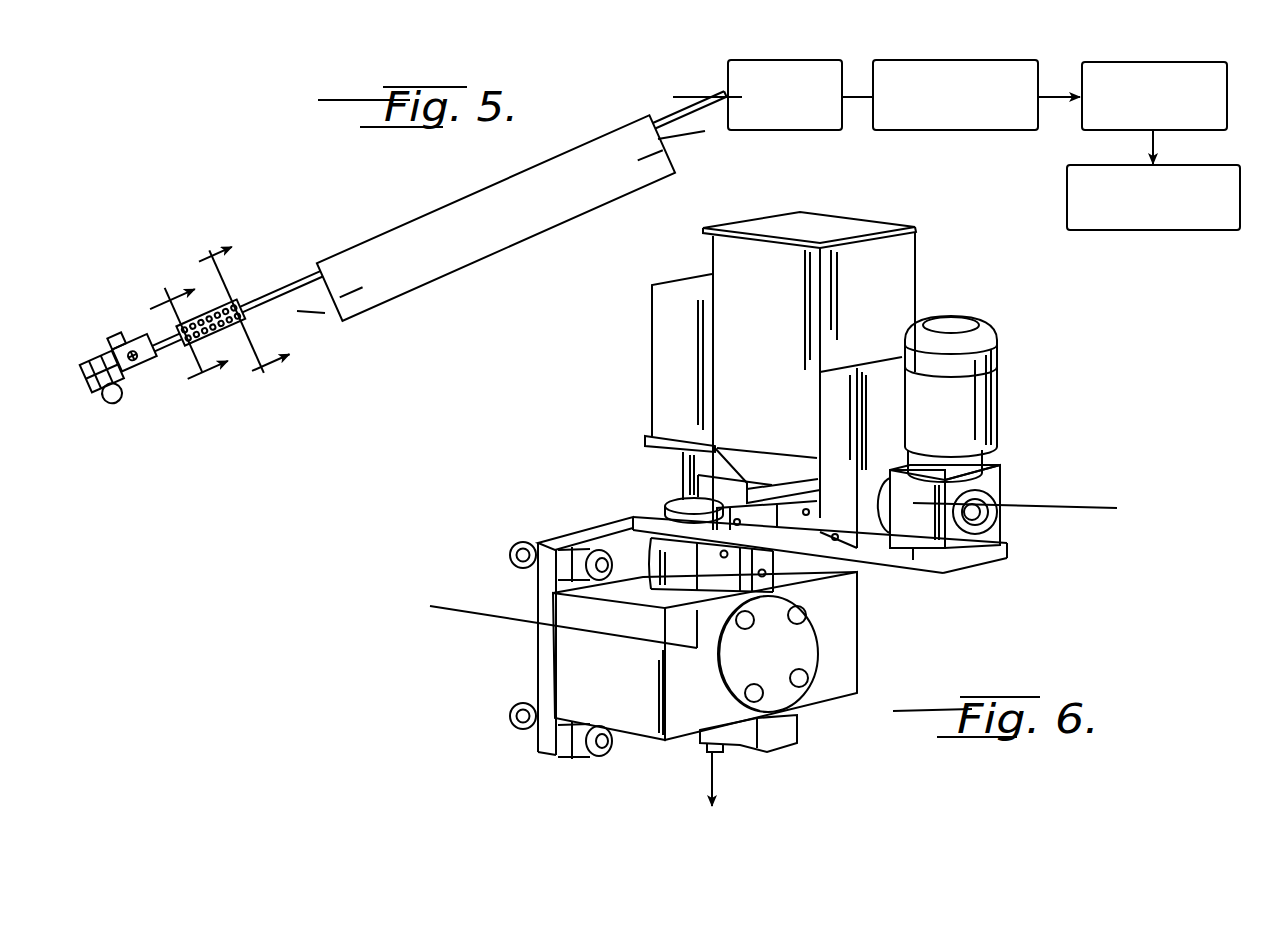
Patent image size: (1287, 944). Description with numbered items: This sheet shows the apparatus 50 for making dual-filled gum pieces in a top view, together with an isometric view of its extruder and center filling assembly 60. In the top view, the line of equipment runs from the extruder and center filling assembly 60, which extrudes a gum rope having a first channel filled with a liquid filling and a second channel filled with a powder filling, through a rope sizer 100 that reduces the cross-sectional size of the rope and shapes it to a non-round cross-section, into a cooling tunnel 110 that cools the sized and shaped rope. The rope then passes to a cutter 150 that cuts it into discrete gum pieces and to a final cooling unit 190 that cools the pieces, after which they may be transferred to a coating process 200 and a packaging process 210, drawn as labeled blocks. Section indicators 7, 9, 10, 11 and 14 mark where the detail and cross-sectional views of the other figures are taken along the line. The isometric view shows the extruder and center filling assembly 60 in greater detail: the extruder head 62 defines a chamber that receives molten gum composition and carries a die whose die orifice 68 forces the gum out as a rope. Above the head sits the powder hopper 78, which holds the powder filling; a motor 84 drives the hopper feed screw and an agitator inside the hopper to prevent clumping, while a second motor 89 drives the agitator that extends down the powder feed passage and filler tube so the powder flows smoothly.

In FIG. 6, the section line 7- 7 is at (1117, 508).
In FIG. 5, the section line 9- 9 is at (174, 337).
In FIG. 5, the section line 10- 10 is at (226, 321).
In FIG. 5, the section line 11- 11 is at (305, 290).
In FIG. 5, the section line 14- 14 is at (685, 106).
In FIG. 5, the apparatus 50 is at (363, 214).
In FIG. 5, the extruder and center filling assembly 60 is at (137, 381).
In FIG. 6, the extruder and center filling assembly 60 is at (755, 509).
In FIG. 6, the extruder head 62 is at (540, 652).
In FIG. 6, the die orifice 68 is at (738, 735).
In FIG. 6, the powder hopper 78 is at (895, 272).
In FIG. 6, the motor 84 is at (985, 383).
In FIG. 6, the motor 89 is at (665, 353).
In FIG. 5, the rope sizer 100 is at (242, 288).
In FIG. 5, the cooling tunnel 110 is at (460, 271).
In FIG. 5, the cutter 150 is at (781, 130).
In FIG. 5, the final cooling unit 190 is at (942, 130).
In FIG. 5, the coating process 200 is at (1173, 62).
In FIG. 5, the packaging process 210 is at (1168, 230).